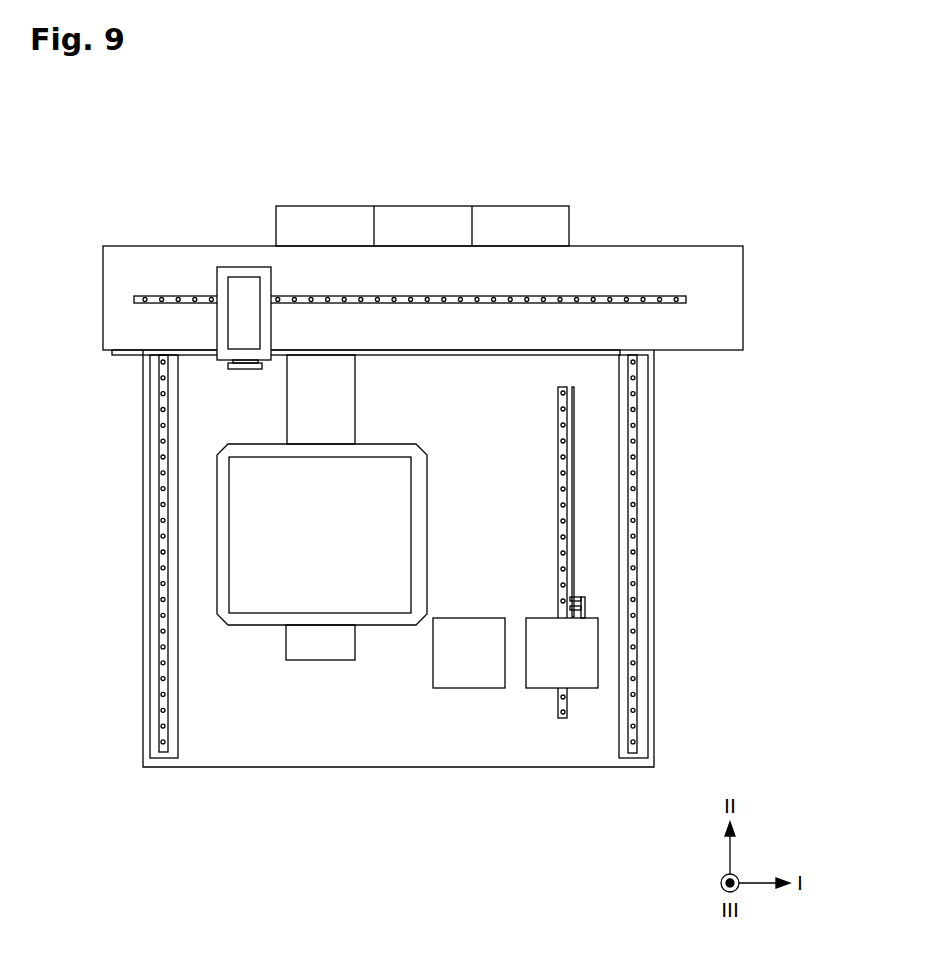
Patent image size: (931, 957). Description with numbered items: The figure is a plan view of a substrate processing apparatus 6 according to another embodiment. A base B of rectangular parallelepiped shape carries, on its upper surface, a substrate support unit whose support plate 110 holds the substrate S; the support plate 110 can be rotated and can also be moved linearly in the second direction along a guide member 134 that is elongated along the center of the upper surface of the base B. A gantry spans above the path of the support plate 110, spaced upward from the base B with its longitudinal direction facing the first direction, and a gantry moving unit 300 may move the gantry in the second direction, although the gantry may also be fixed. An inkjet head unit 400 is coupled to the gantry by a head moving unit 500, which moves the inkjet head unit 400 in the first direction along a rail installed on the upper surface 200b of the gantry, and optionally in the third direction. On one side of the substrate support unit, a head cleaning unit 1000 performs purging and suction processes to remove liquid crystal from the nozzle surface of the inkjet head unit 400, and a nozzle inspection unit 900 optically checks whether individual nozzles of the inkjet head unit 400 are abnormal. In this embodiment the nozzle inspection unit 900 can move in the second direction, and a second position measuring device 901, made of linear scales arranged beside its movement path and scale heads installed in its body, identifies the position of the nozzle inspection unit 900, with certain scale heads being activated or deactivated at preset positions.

The substrate processing apparatus 6 is at (697, 137).
The base B is at (221, 752).
The support plate 110 is at (210, 600).
The guide member 134 is at (286, 640).
The substrate S is at (253, 531).
The upper surface of the gantry 200b is at (730, 299).
The gantry moving unit 300 is at (640, 717).
The inkjet head unit 400 is at (243, 373).
The head moving unit 500 is at (203, 363).
The nozzle inspection unit 900 is at (536, 700).
The second position measuring device 901 is at (600, 603).
The head cleaning unit 1000 is at (442, 700).